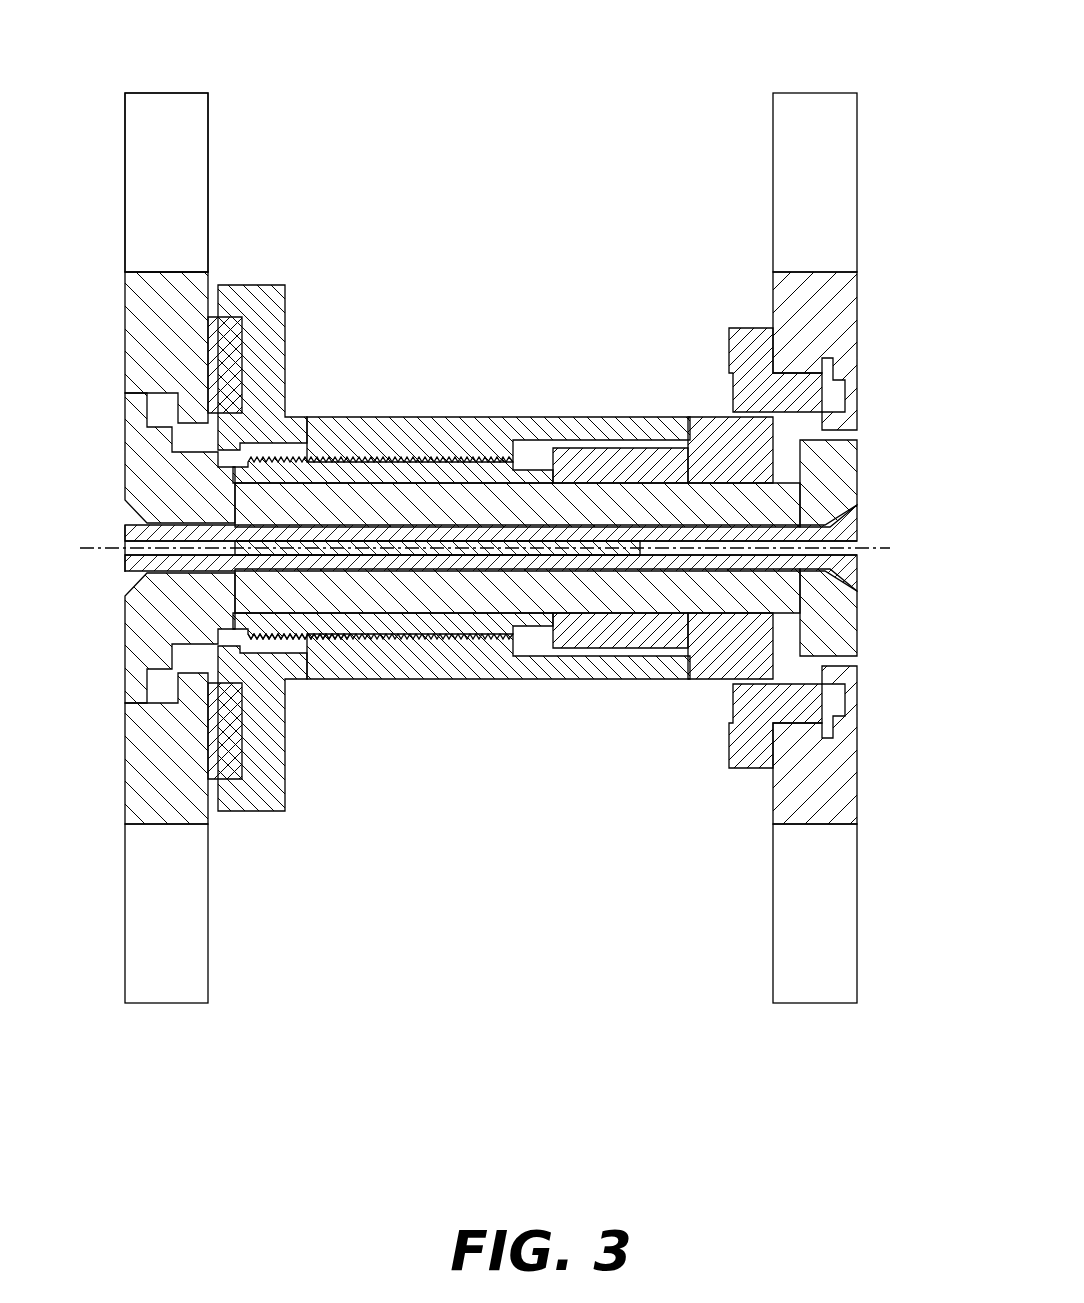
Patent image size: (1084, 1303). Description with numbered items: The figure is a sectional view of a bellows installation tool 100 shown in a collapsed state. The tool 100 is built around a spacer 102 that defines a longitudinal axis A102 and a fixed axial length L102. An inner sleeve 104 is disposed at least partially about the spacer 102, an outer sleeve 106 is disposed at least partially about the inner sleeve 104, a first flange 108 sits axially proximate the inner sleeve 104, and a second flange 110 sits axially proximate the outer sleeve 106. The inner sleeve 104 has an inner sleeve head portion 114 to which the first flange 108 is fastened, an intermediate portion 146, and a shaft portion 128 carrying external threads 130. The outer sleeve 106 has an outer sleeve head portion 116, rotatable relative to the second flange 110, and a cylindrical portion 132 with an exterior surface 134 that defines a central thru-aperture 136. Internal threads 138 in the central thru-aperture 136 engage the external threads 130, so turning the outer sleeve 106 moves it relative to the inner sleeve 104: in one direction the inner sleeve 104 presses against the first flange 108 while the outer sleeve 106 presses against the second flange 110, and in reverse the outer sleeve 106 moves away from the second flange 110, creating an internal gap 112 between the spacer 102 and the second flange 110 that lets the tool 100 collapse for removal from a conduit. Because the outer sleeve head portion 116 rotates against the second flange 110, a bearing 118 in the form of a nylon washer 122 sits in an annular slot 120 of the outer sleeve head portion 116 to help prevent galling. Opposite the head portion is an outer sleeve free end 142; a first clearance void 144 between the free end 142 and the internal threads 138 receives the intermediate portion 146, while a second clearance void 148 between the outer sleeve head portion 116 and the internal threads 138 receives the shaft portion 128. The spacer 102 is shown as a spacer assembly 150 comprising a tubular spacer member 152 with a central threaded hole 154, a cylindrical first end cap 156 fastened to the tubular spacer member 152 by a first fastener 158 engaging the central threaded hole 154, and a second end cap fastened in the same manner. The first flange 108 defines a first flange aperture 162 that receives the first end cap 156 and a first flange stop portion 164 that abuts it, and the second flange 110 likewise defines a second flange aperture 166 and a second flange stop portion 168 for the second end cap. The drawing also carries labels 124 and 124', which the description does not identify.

The bellows installation tool 100 is at (653, 53).
The spacer 102 is at (629, 475).
The inner sleeve 104 is at (595, 640).
The outer sleeve 106 is at (395, 428).
The first flange 108 is at (862, 786).
The second flange 110 is at (210, 212).
The internal gap 112 is at (152, 409).
The inner sleeve head portion 114 is at (732, 410).
The outer sleeve head portion 116 is at (292, 350).
The bearing 118 is at (236, 795).
The annular slot 120 is at (228, 763).
The nylon washer 122 is at (233, 330).
The second flange plate 124 is at (855, 548).
The first flange plate 124' is at (210, 543).
The shaft portion 128 is at (447, 637).
The external threads 130 is at (495, 637).
The cylindrical portion 132 is at (571, 425).
The exterior surface 134 is at (480, 420).
The central thru-aperture 136 is at (544, 418).
The internal threads 138 is at (422, 460).
The outer sleeve free end 142 is at (704, 440).
The first clearance void 144 is at (652, 432).
The intermediate portion 146 is at (667, 648).
The second clearance void 148 is at (288, 453).
The spacer assembly 150 is at (118, 630).
The tubular spacer member 152 is at (609, 598).
The central threaded hole 154 is at (705, 528).
The first end cap 156 is at (847, 655).
The first fastener 158 is at (845, 615).
The first flange aperture 162 is at (855, 433).
The first flange stop portion 164 is at (735, 745).
The second flange aperture 166 is at (157, 703).
The second flange stop portion 168 is at (182, 414).
The fixed axial length L102 is at (845, 543).
The longitudinal axis A102 is at (877, 550).